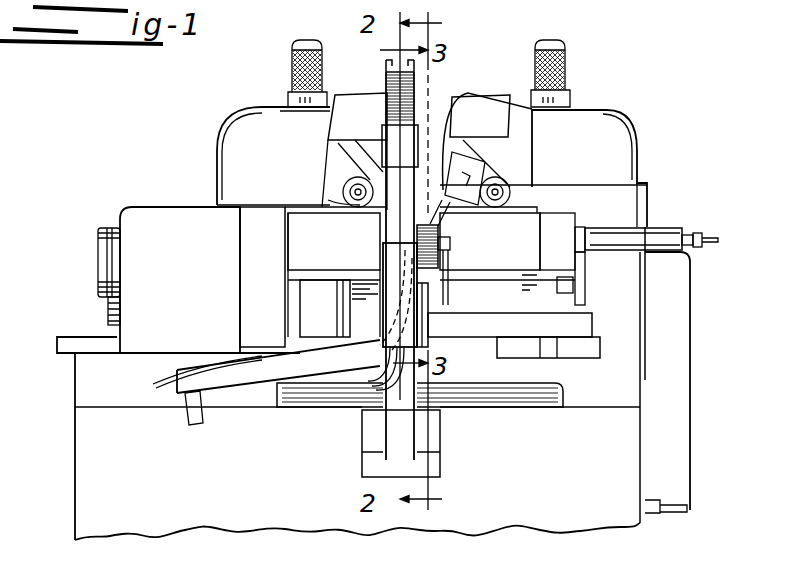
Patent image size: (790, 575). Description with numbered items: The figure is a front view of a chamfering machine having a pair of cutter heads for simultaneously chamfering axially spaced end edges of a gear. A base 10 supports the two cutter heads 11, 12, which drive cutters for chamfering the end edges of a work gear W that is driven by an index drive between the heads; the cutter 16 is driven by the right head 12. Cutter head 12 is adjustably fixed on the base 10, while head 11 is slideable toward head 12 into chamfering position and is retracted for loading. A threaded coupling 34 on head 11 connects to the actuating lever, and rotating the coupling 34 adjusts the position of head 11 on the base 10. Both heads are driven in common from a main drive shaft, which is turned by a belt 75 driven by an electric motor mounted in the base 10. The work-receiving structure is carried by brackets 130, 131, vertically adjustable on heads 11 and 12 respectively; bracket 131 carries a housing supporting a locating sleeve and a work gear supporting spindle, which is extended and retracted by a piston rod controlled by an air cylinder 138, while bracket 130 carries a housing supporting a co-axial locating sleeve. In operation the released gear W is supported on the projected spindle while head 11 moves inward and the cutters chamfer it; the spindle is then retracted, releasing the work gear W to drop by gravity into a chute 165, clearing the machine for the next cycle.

The base 10 is at (87, 382).
The cutter head 11 is at (219, 114).
The cutter head 12 is at (624, 113).
The cutter 16 is at (443, 222).
The work gear W is at (450, 245).
The coupling 34 is at (98, 282).
The belt 75 is at (660, 513).
The bracket 130 is at (331, 317).
The bracket 131 is at (531, 356).
The air cylinder 138 is at (658, 228).
The chute 165 is at (432, 270).